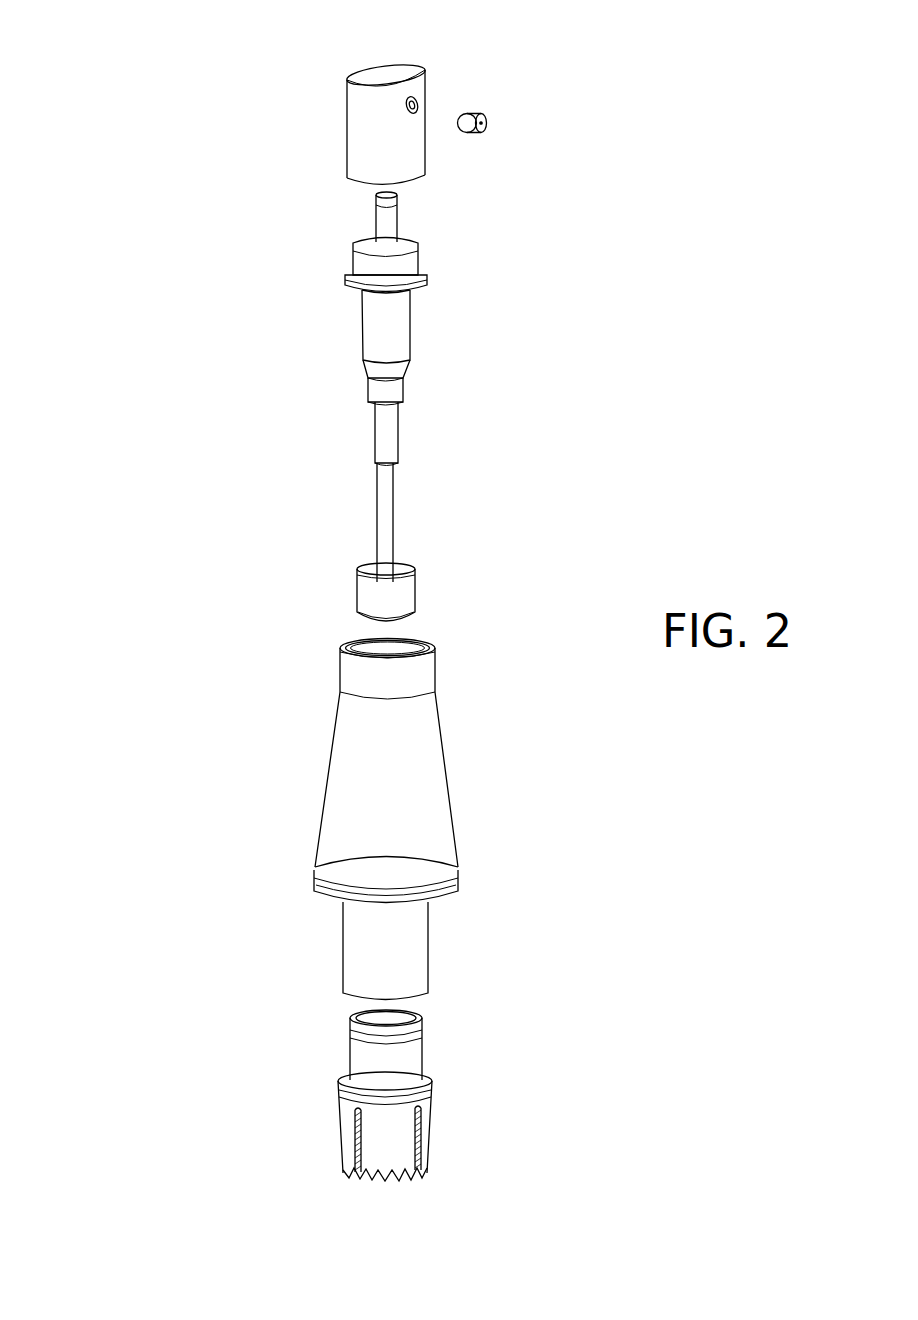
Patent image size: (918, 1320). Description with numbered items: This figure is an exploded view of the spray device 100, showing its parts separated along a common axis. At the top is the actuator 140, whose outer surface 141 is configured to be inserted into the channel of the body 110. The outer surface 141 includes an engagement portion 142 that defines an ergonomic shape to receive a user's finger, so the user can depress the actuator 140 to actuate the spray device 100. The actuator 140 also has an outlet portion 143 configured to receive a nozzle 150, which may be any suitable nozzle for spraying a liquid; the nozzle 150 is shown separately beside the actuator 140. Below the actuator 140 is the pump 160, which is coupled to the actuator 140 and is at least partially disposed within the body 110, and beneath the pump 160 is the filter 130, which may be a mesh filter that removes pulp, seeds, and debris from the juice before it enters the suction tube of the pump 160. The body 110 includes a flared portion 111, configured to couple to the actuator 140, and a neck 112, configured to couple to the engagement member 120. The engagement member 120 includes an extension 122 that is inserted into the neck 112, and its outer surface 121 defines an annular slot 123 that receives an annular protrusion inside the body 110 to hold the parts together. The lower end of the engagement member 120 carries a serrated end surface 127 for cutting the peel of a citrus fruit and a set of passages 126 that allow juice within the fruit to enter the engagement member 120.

The spray device 100 is at (147, 129).
The body 110 is at (348, 758).
The flared portion 111 is at (332, 857).
The neck 112 is at (355, 947).
The engagement member 120 is at (345, 1153).
The outer surface 121 is at (432, 1090).
The extension 122 is at (353, 1062).
The annular slot 123 is at (353, 1033).
The passages 126 is at (425, 1143).
The serrated end surface 127 is at (420, 1178).
The filter 130 is at (408, 598).
The actuator 140 is at (367, 158).
The outer surface 141 is at (357, 103).
The engagement portion 142 is at (380, 77).
The outlet portion 143 is at (420, 100).
The nozzle 150 is at (487, 118).
The pump 160 is at (438, 373).